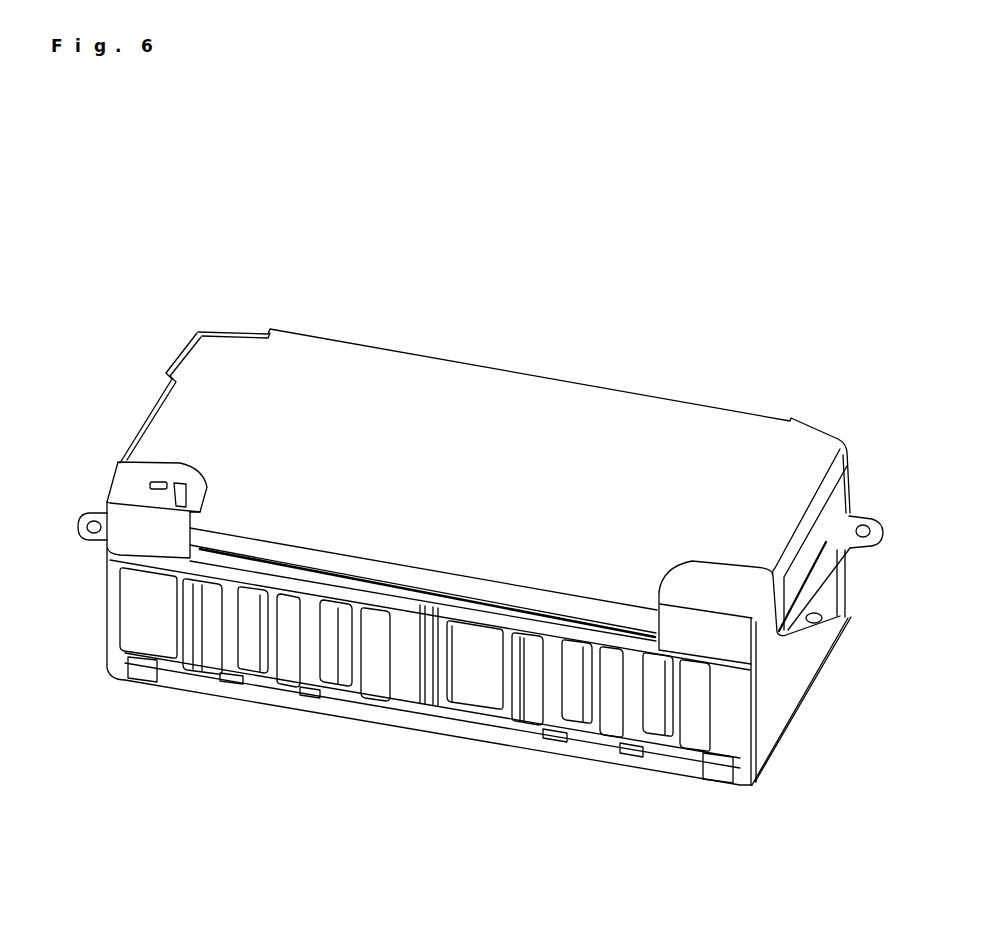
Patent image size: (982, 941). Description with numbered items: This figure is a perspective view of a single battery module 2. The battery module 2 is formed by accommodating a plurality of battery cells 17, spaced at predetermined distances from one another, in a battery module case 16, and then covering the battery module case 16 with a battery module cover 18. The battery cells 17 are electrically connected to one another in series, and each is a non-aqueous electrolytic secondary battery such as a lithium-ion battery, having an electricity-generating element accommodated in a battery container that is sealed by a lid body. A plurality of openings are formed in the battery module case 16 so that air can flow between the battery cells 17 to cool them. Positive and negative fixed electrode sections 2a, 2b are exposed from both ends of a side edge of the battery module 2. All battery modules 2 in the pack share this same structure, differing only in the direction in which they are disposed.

The battery module 2 is at (282, 328).
The positive fixed electrode section 2a is at (140, 487).
The negative fixed electrode section 2b is at (735, 590).
The battery module case 16 is at (407, 717).
The battery cells 17 is at (162, 628).
The battery module cover 18 is at (452, 394).